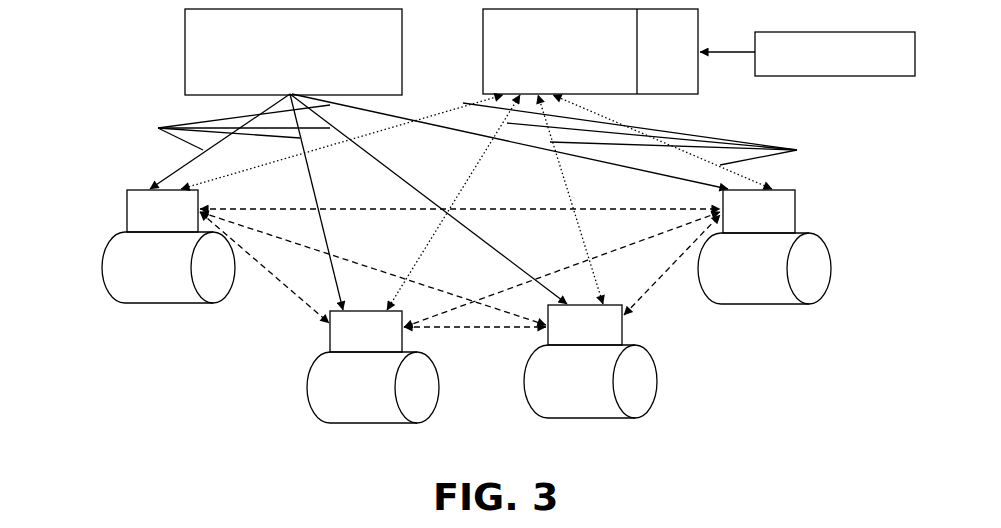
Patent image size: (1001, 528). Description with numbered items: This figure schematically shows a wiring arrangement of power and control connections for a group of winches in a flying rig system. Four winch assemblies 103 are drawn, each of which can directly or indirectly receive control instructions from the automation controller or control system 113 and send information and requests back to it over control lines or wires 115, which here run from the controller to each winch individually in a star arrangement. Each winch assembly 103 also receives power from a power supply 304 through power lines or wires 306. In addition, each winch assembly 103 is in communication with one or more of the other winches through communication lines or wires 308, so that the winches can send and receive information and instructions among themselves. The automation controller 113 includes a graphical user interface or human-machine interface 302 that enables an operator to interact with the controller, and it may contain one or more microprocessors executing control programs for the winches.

The winch assembly 103 is at (115, 233).
The automation controller or control system 113 is at (615, 95).
The control lines or wires 115 is at (510, 202).
The graphical user interface (GUI) or human-machine interface (HMI) 302 is at (700, 84).
The power supply 304 is at (185, 70).
The power lines or wires 306 is at (415, 202).
The communication lines or wires 308 is at (283, 286).